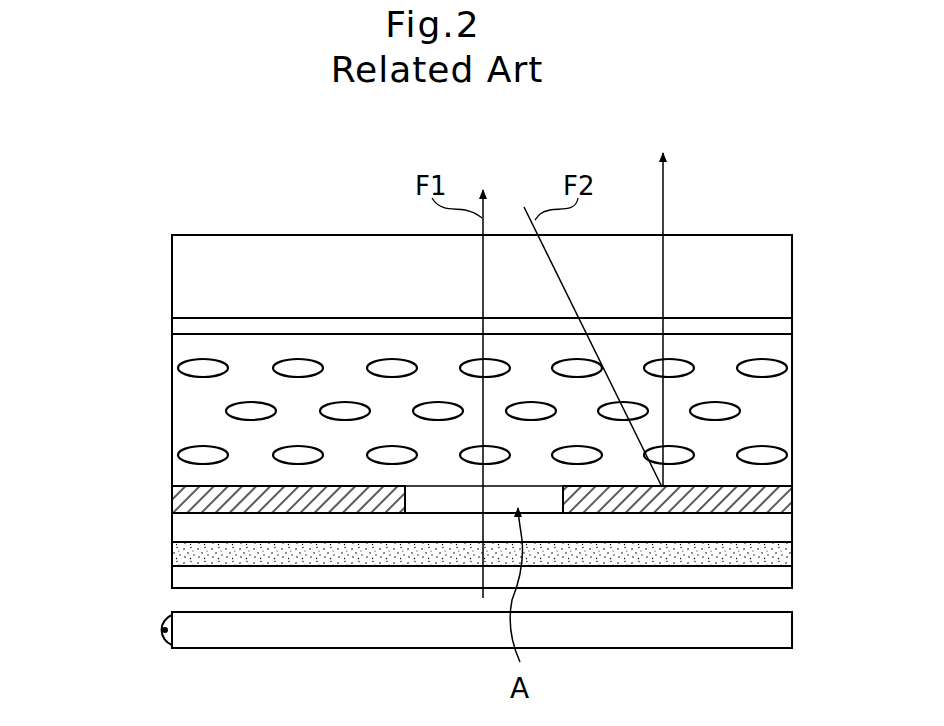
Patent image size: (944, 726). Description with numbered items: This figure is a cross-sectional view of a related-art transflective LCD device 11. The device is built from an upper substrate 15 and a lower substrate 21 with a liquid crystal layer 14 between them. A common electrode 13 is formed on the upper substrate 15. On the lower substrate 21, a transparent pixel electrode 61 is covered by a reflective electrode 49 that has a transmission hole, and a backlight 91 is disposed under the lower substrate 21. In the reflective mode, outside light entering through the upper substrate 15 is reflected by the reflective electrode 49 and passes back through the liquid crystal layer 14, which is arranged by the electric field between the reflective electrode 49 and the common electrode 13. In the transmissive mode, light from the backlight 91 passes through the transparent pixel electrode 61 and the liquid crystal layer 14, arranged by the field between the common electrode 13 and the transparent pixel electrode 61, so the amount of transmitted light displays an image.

The transflective LCD device 11 is at (98, 286).
The upper substrate 15 is at (783, 285).
The common electrode 13 is at (785, 326).
The liquid crystal layer 14 is at (785, 366).
The reflective electrode 49 is at (787, 499).
The transparent pixel electrode 61 is at (788, 550).
The lower substrate 21 is at (788, 578).
The backlight 91 is at (788, 630).